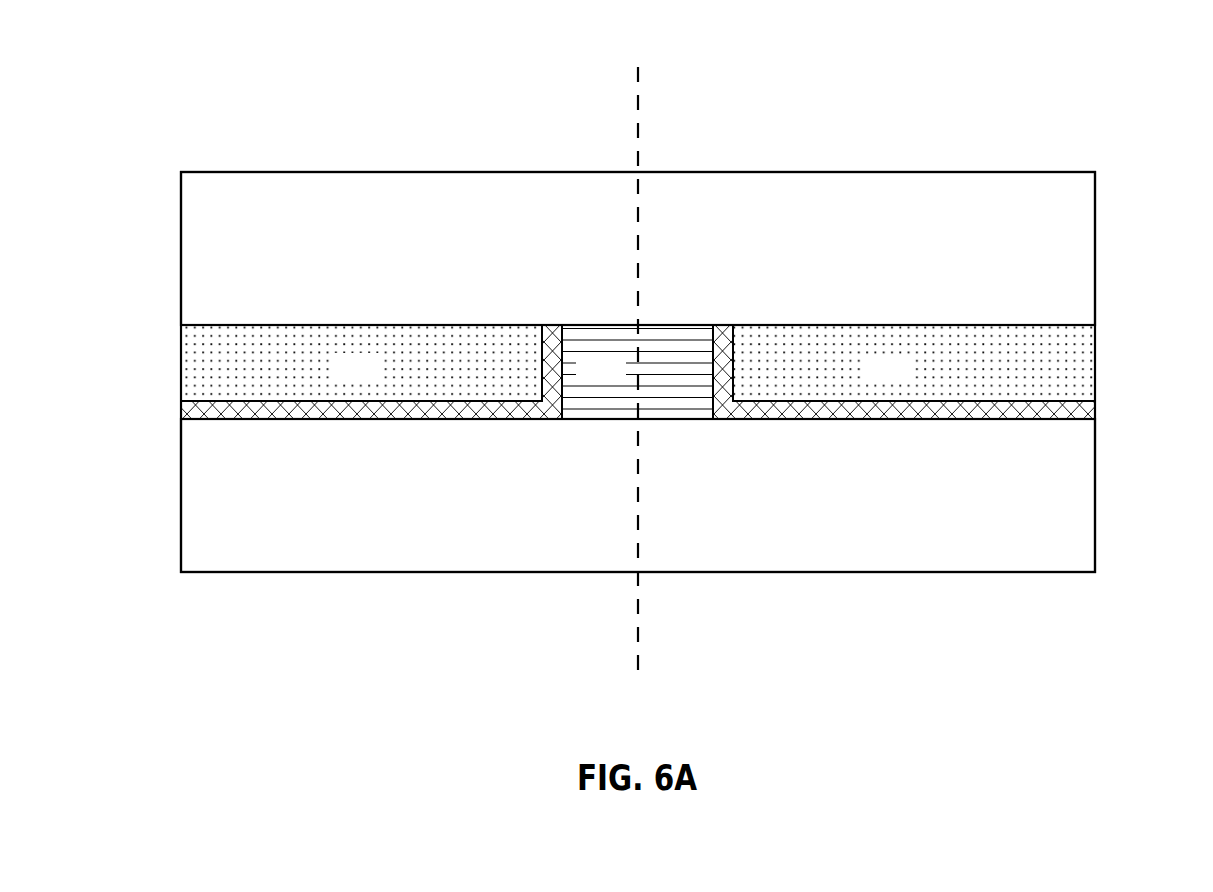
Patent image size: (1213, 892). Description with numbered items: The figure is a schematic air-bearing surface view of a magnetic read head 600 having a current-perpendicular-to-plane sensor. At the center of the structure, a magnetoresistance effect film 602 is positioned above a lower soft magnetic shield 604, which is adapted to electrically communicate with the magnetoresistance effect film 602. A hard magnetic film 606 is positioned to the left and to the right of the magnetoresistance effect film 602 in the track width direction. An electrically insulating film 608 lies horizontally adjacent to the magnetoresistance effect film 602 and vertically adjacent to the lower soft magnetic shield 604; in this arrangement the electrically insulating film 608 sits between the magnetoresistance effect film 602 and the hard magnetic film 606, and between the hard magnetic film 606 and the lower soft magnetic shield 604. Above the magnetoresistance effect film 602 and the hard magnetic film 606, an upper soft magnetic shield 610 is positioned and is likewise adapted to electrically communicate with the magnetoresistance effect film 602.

The magnetic read head 600 is at (637, 347).
The magnetoresistance effect film 602 is at (620, 376).
The lower soft magnetic shield 604 is at (277, 546).
The hard magnetic film 606 is at (376, 378).
The electrically insulating film 608 is at (190, 408).
The upper soft magnetic shield 610 is at (278, 224).